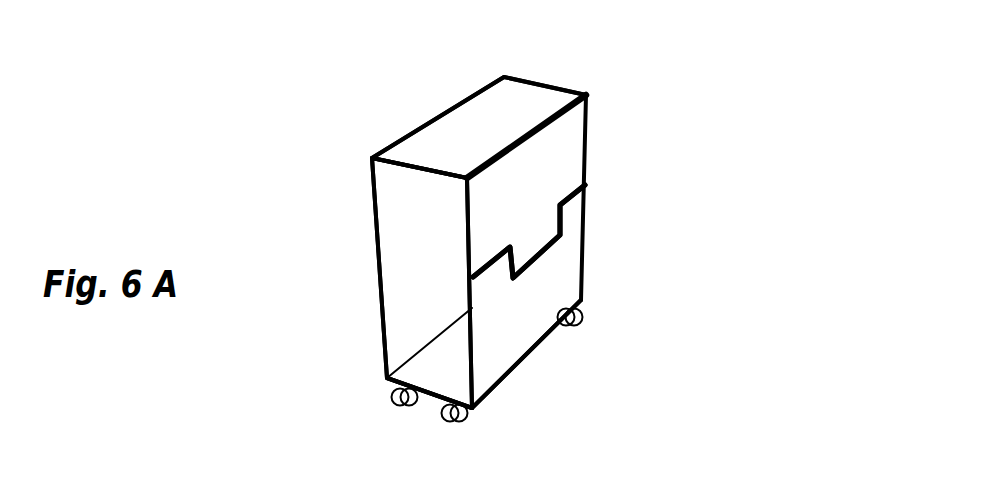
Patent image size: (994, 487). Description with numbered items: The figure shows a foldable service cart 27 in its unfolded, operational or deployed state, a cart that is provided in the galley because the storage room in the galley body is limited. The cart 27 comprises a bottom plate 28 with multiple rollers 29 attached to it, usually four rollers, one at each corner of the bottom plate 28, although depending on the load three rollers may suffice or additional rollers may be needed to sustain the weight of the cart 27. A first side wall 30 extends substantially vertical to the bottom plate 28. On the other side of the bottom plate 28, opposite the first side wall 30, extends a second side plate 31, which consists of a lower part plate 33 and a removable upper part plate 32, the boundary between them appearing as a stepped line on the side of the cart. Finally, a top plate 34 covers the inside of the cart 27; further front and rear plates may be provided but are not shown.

The service cart 27 is at (579, 232).
The bottom plate 28 is at (432, 362).
The rollers 29 is at (410, 403).
The first side wall 30 is at (418, 218).
The second side plate 31 is at (632, 197).
The removable upper part plate 32 is at (565, 160).
The lower part plate 33 is at (563, 258).
The top plate 34 is at (520, 93).